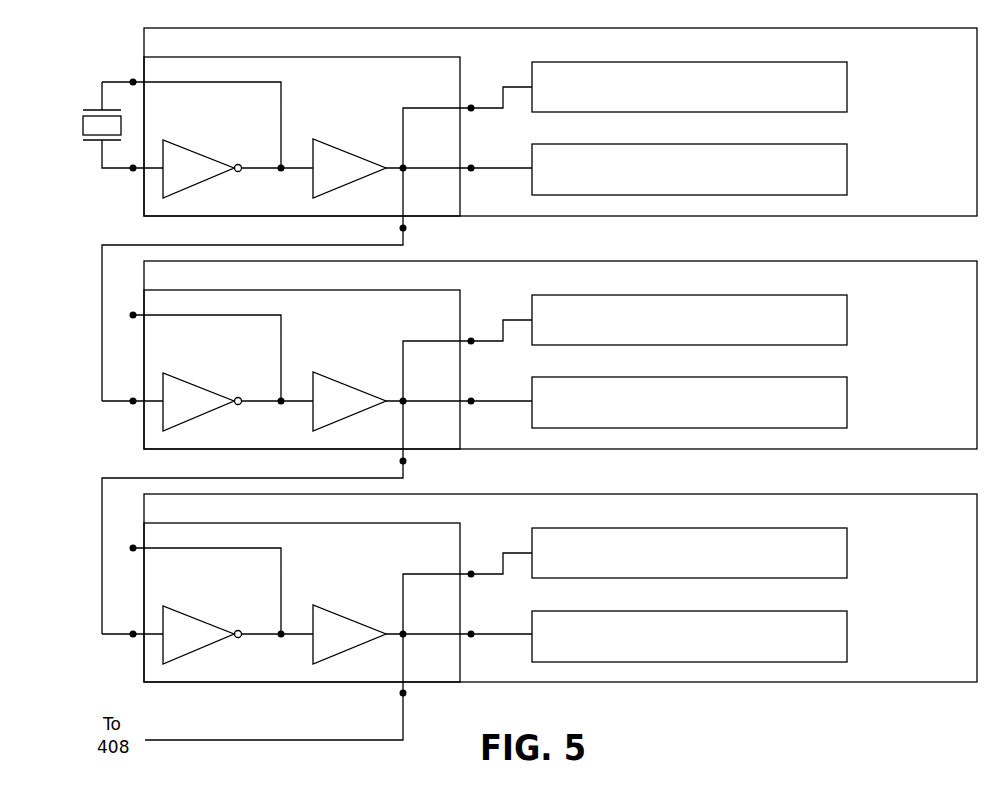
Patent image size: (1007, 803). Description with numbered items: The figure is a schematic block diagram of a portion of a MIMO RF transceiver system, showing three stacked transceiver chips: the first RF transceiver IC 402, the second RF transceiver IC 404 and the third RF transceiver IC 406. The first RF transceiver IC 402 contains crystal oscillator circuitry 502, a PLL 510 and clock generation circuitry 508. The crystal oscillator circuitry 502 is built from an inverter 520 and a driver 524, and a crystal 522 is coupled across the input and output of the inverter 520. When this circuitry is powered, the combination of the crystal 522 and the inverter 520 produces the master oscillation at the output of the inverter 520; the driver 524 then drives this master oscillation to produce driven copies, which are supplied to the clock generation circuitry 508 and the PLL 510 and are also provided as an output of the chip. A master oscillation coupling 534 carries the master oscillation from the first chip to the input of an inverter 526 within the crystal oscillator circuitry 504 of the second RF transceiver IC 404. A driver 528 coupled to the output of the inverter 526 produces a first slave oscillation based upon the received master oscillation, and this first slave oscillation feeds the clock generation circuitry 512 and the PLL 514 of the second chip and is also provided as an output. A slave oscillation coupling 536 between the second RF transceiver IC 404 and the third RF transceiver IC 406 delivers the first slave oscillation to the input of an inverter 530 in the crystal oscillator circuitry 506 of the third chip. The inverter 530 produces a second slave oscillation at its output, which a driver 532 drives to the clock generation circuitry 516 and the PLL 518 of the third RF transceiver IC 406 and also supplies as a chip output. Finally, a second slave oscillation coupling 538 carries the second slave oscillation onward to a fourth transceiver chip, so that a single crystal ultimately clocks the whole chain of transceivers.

The first RF transceiver IC 402 is at (924, 28).
The second RF transceiver IC 404 is at (924, 261).
The third RF transceiver IC 406 is at (924, 494).
The crystal oscillator circuitry 502 is at (383, 57).
The crystal oscillator circuitry 504 is at (383, 290).
The crystal oscillator circuitry 506 is at (383, 523).
The clock generation circuitry 508 is at (790, 62).
The PLL 510 is at (790, 144).
The clock generation circuitry 512 is at (790, 295).
The PLL 514 is at (790, 377).
The clock generation circuitry 516 is at (790, 528).
The PLL 518 is at (790, 611).
The inverter 520 is at (186, 152).
The crystal 522 is at (84, 109).
The driver 524 is at (336, 152).
The inverter 526 is at (186, 385).
The driver 528 is at (336, 385).
The inverter 530 is at (186, 618).
The driver 532 is at (336, 618).
The master oscillation coupling 534 is at (102, 280).
The slave oscillation coupling 536 is at (102, 513).
The second slave oscillation coupling 538 is at (332, 739).